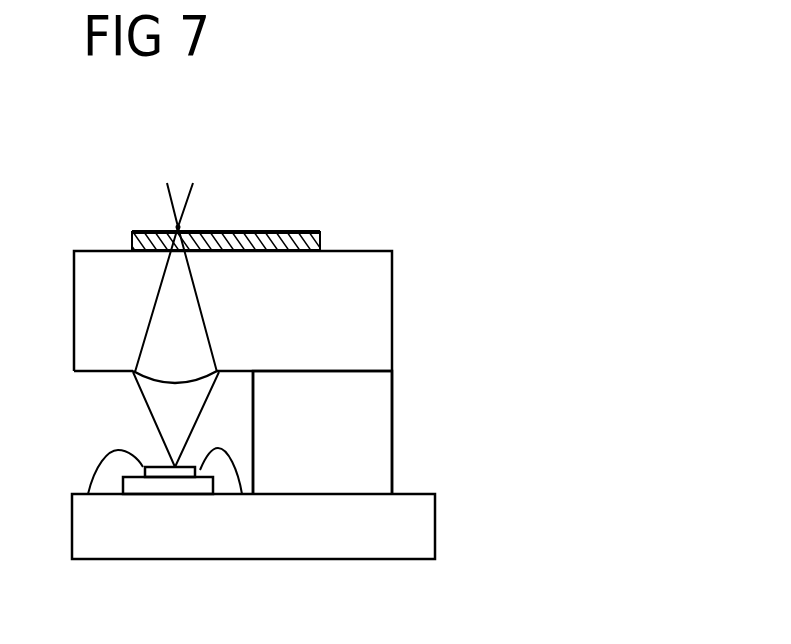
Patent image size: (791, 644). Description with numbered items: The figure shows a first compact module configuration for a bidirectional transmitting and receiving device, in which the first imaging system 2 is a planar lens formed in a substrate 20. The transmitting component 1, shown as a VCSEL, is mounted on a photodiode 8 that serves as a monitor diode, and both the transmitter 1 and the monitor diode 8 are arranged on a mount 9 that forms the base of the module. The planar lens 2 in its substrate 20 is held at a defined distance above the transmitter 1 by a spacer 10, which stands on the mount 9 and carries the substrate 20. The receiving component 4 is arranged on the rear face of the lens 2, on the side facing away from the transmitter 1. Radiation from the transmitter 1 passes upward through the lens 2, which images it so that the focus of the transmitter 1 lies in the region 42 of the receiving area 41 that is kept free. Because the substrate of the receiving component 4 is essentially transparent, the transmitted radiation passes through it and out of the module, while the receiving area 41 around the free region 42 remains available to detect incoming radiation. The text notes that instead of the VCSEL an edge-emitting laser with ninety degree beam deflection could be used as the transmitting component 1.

The transmitting component 1 is at (175, 470).
The first imaging system 2 is at (167, 342).
The receiving component 4 is at (308, 244).
The photodiode 8 is at (183, 490).
The mount 9 is at (295, 543).
The spacer 10 is at (372, 438).
The substrate 20 is at (370, 293).
The receiving area 41 is at (275, 230).
The region 42 is at (190, 224).